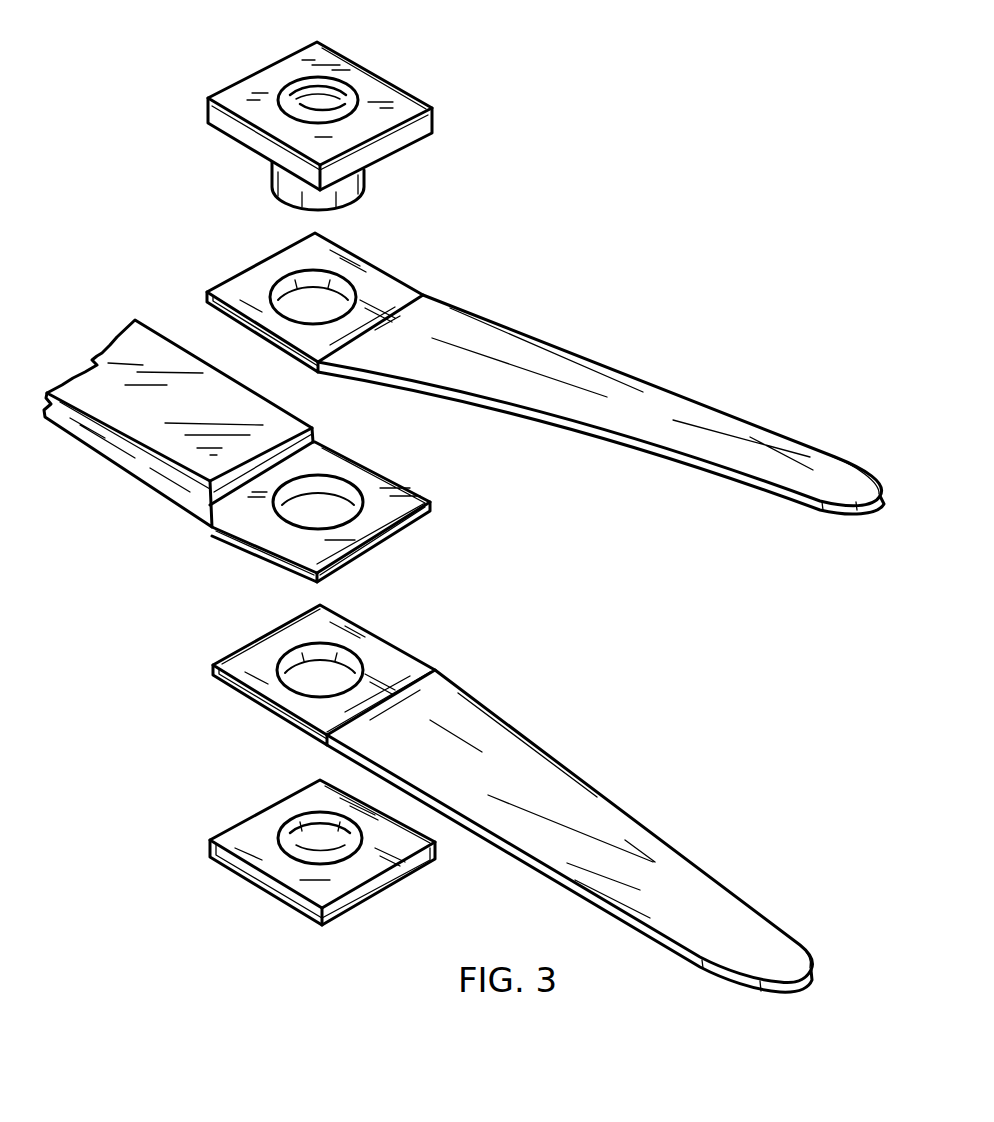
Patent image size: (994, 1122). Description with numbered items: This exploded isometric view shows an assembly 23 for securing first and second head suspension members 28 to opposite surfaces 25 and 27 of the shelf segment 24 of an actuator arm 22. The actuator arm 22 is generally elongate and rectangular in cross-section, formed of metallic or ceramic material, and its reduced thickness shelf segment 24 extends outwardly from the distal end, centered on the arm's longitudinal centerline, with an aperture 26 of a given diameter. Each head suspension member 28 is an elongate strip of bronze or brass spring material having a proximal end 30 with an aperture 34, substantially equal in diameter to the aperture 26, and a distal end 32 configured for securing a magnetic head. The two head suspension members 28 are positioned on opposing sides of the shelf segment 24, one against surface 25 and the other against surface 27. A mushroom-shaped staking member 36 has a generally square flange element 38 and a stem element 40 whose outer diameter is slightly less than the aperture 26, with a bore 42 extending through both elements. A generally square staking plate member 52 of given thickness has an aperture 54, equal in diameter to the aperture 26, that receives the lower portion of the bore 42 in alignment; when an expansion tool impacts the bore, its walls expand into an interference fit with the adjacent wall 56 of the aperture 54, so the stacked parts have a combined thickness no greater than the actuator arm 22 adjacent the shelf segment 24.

The actuator arm 22 is at (163, 318).
The assembly 23 is at (138, 645).
The shelf segment 24 is at (259, 542).
The surface 25 is at (404, 497).
The aperture 26 is at (318, 508).
The surface 27 is at (401, 533).
The head suspension member 28 is at (593, 456).
The proximal end 30 is at (365, 257).
The distal end 32 is at (828, 462).
The aperture 34 is at (291, 280).
The staking member 36 is at (452, 70).
The flange element 38 is at (434, 118).
The stem element 40 is at (363, 171).
The bore 42 is at (292, 87).
The staking plate member 52 is at (222, 885).
The aperture 54 is at (320, 845).
The wall 56 is at (303, 825).